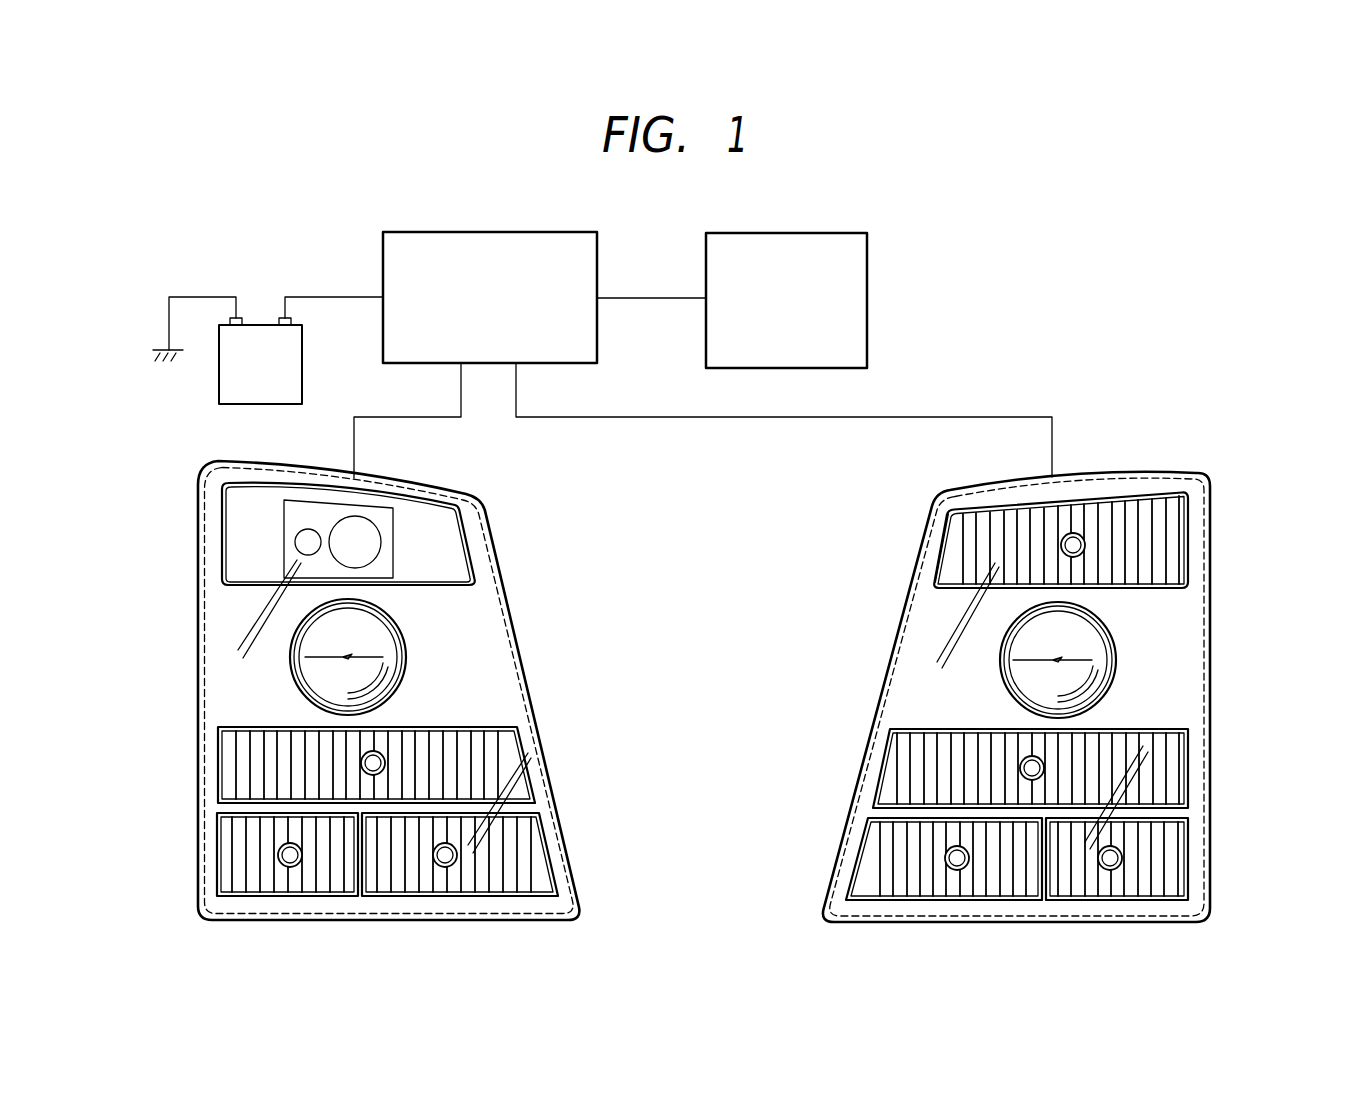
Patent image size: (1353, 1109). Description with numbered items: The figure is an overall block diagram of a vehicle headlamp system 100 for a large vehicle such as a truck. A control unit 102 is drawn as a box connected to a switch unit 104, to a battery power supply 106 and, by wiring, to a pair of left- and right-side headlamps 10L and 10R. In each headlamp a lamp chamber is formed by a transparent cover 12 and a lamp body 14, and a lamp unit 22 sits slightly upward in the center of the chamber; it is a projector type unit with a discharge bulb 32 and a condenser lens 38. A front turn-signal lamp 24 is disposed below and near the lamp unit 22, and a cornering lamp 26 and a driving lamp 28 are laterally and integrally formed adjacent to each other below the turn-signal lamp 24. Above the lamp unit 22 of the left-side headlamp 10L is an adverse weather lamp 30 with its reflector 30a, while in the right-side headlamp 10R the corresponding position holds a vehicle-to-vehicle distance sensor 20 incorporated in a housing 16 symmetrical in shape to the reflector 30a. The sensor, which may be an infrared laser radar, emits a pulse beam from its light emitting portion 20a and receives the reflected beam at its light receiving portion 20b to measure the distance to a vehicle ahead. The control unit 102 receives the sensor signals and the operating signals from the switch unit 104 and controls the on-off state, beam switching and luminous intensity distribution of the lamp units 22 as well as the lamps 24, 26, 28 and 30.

The vehicle headlamp system 100 is at (1040, 305).
The control unit 102 is at (546, 232).
The switch unit 104 is at (822, 233).
The battery power supply 106 is at (218, 372).
The right-side headlamp 10R is at (567, 543).
The left-side headlamp 10L is at (845, 555).
The transparent cover 12 is at (478, 630).
The lamp body 14 is at (525, 670).
The housing 16 is at (463, 522).
The vehicle-to-vehicle distance sensor 20 is at (367, 503).
The light emitting portion 20a is at (294, 543).
The light receiving portion 20b is at (377, 545).
The lamp unit 22 is at (413, 690).
The front turn-signal lamp 24 is at (522, 747).
The cornering lamp 26 is at (547, 840).
The driving lamp 28 is at (215, 843).
The adverse weather lamp 30 is at (1122, 490).
The reflector 30a is at (943, 522).
The discharge bulb 32 is at (323, 660).
The condenser lens 38 is at (373, 633).